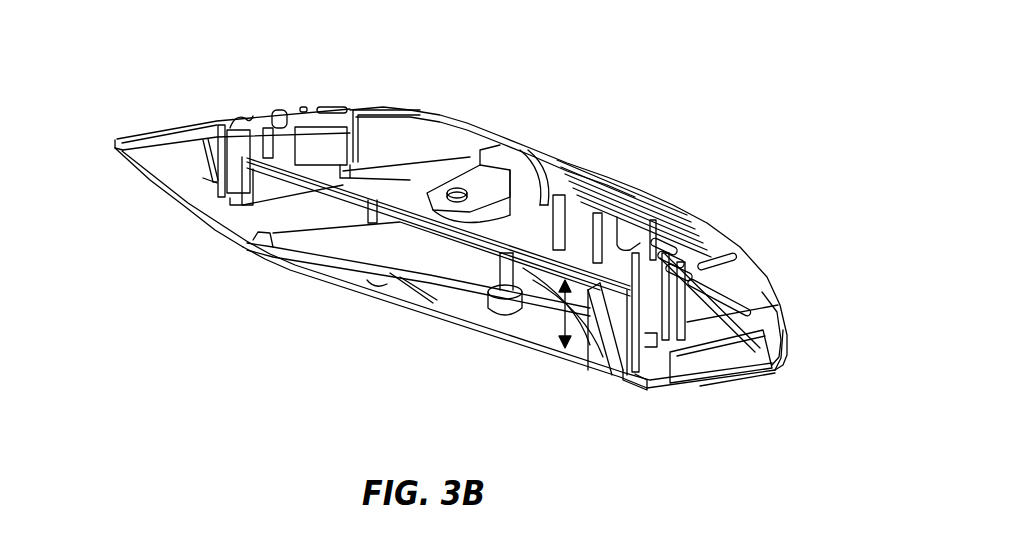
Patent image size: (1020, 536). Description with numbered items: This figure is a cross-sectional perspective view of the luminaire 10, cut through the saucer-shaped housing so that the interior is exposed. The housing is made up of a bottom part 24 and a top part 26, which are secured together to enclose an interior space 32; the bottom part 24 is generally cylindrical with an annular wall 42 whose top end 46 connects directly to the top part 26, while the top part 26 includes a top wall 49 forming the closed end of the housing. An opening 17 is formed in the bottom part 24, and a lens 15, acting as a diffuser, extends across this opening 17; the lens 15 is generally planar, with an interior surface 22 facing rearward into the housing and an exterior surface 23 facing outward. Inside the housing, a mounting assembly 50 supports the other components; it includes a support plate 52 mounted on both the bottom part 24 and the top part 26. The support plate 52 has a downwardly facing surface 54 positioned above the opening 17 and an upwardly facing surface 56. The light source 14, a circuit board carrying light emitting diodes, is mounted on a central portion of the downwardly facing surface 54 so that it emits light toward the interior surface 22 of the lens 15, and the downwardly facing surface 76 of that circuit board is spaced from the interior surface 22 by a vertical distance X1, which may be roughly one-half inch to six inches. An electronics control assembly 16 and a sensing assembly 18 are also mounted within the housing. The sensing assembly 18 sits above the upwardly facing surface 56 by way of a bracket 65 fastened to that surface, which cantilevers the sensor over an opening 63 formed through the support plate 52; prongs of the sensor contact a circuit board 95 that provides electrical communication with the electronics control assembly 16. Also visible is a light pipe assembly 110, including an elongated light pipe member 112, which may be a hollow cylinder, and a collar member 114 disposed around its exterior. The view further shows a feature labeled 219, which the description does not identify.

The luminaire 10 is at (148, 95).
The light source 14 is at (595, 298).
The lens 15 is at (338, 298).
The electronics control assembly 16 is at (451, 142).
The opening 17 is at (627, 382).
The sensing assembly 18 is at (515, 178).
The interior surface 22 is at (375, 293).
The exterior surface 23 is at (400, 305).
The bottom part 24 is at (737, 377).
The top part 26 is at (352, 108).
The interior space 32 is at (340, 250).
The annular wall 42 is at (757, 347).
The top end 46 is at (777, 372).
The top wall 49 is at (425, 108).
The mounting assembly 50 is at (422, 160).
The support plate 52 is at (260, 182).
The downwardly facing surface 54 is at (264, 192).
The upwardly facing surface 56 is at (382, 197).
The opening 63 is at (548, 178).
The bracket 65 is at (480, 160).
The downwardly facing surface 76 is at (648, 386).
The circuit board 95 is at (487, 190).
The light pipe assembly 110 is at (462, 305).
The elongated light pipe member 112 is at (522, 310).
The collar member 114 is at (508, 300).
The ridge 219 is at (440, 250).
The vertical distance X1 is at (545, 300).